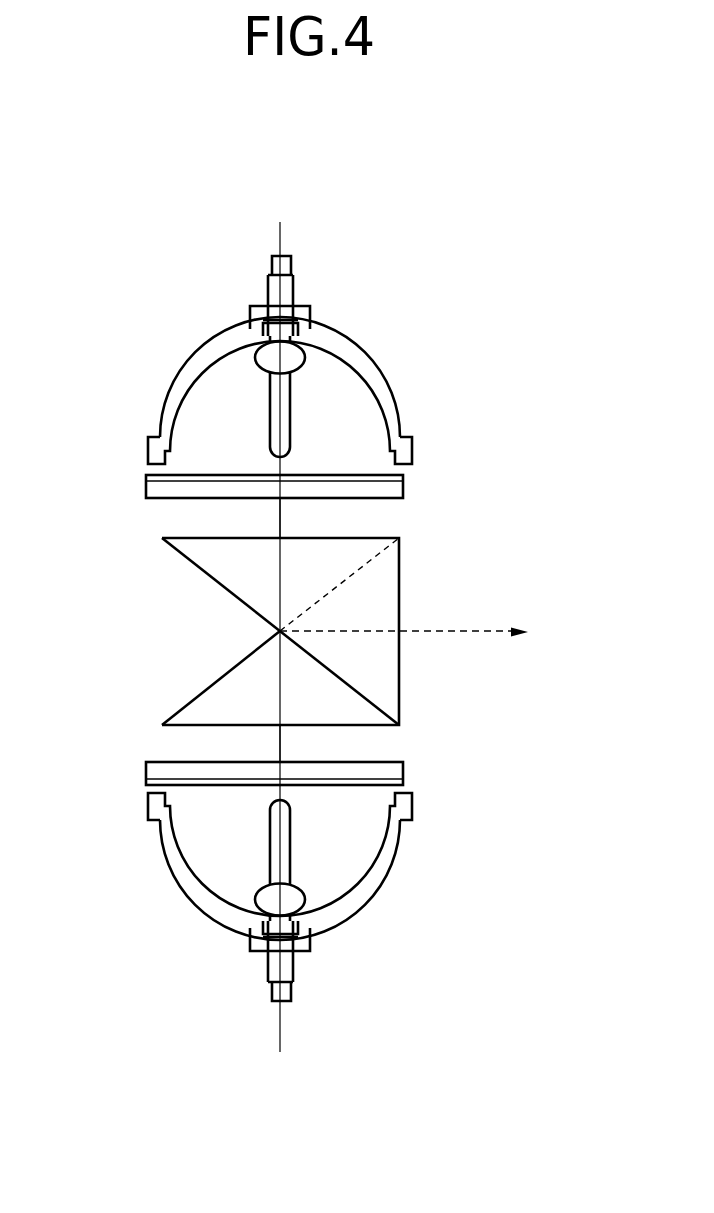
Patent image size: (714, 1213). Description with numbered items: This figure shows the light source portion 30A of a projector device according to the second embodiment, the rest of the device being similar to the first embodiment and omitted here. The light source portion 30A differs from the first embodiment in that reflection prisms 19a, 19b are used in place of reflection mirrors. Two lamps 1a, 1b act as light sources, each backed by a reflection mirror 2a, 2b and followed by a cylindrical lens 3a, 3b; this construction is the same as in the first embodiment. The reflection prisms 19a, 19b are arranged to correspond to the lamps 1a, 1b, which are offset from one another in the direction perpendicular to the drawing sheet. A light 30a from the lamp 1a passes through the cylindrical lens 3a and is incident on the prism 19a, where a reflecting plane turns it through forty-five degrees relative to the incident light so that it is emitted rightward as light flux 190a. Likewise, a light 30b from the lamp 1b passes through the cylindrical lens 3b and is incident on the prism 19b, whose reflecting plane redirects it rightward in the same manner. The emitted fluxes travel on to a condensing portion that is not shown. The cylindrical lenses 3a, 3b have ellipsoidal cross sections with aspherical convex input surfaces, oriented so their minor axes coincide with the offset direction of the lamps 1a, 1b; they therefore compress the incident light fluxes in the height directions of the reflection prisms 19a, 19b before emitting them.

The light source portion 30A is at (481, 307).
The lamp 1a is at (290, 407).
The lamp 1b is at (302, 892).
The reflection mirror 2a is at (189, 366).
The reflection mirror 2b is at (196, 899).
The cylindrical lens 3a is at (146, 487).
The cylindrical lens 3b is at (146, 775).
The reflection prism 19a is at (207, 575).
The reflection prism 19b is at (207, 686).
The light 30a is at (280, 515).
The light 30b is at (280, 748).
The light flux 190a is at (465, 632).